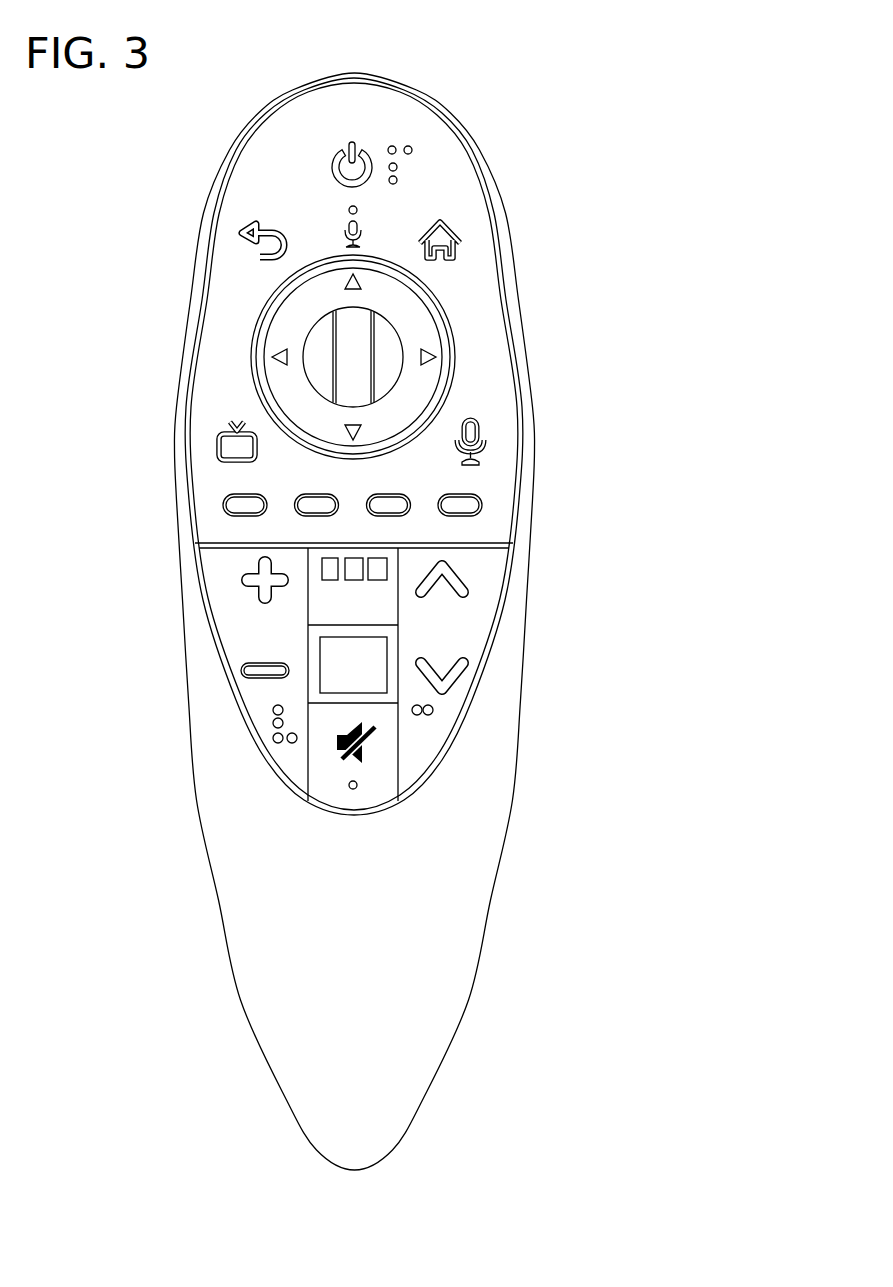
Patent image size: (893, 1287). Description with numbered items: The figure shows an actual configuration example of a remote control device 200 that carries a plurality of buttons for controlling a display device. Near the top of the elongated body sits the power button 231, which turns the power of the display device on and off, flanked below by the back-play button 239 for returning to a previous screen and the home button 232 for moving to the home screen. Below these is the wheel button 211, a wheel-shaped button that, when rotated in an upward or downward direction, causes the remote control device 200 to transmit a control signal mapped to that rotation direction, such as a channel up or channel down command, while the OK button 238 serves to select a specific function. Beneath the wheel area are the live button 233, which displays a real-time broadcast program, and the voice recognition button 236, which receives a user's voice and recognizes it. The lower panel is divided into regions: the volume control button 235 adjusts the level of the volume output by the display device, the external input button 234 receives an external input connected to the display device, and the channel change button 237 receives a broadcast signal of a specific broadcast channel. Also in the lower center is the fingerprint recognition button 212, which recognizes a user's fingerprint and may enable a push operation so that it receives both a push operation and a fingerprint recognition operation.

The remote control device 200 is at (121, 112).
The wheel button 211 is at (365, 337).
The fingerprint recognition button 212 is at (370, 694).
The power button 231 is at (370, 153).
The home button 232 is at (457, 230).
The live button 233 is at (216, 453).
The external input button 234 is at (363, 558).
The volume control button 235 is at (213, 647).
The voice recognition button 236 is at (483, 443).
The channel change button 237 is at (478, 615).
The OK button 238 is at (317, 338).
The back-play button 239 is at (258, 240).